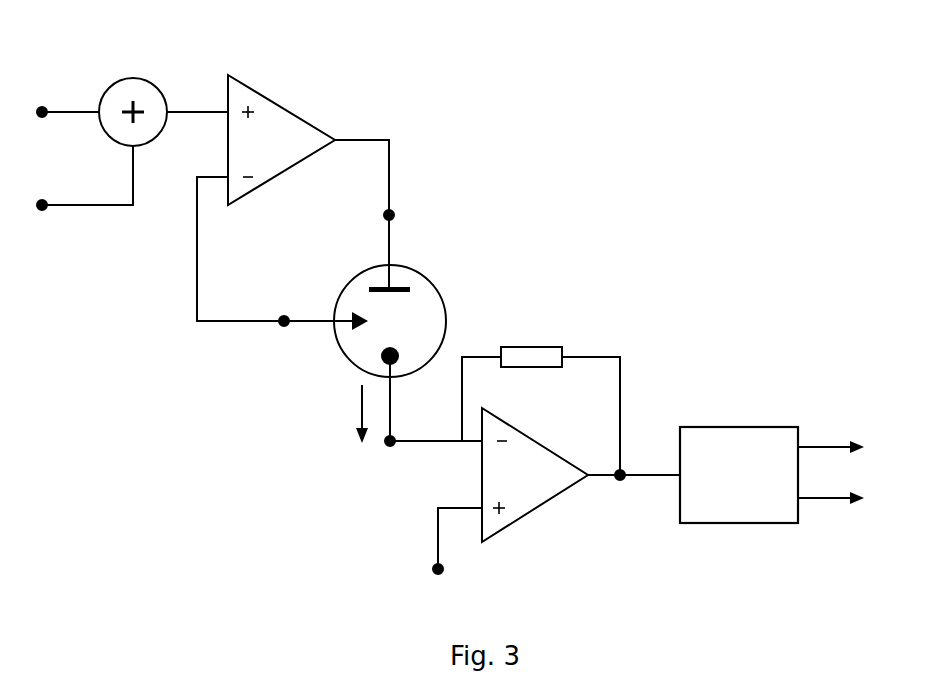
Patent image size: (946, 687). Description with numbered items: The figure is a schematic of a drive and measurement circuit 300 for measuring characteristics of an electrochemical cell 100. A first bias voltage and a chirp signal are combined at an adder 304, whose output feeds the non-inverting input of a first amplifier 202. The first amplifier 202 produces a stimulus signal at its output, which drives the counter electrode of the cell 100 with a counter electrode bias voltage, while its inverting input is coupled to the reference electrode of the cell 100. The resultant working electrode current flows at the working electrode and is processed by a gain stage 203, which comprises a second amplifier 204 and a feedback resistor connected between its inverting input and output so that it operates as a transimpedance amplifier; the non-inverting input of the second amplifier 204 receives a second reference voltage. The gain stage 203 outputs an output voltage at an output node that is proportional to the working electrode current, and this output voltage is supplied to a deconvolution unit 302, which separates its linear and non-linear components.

The drive and measurement circuit 300 is at (592, 236).
The adder 304 is at (149, 80).
The first amplifier 202 is at (307, 122).
The electrochemical cell 100 is at (437, 275).
The gain stage 203 is at (578, 531).
The second amplifier 204 is at (562, 452).
The deconvolution unit 302 is at (756, 499).